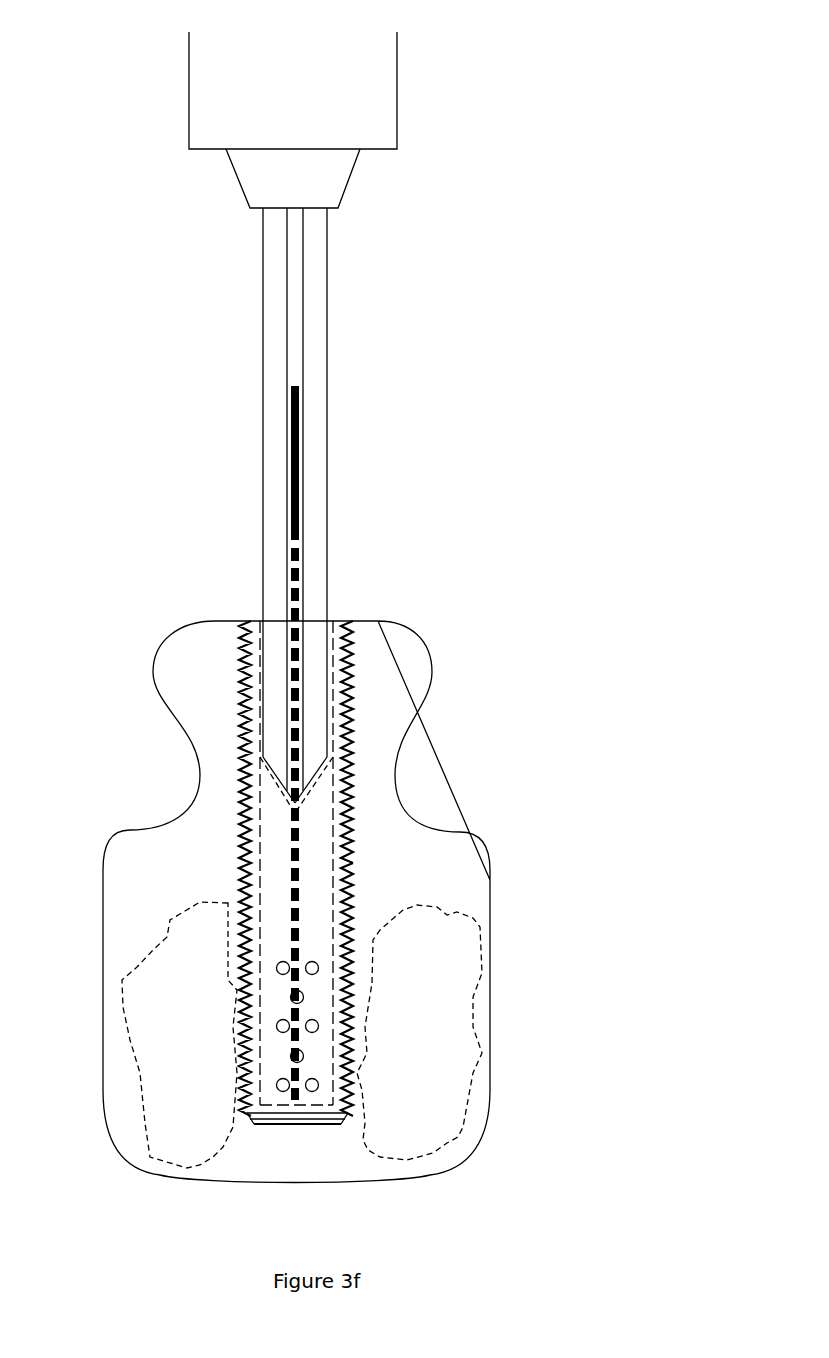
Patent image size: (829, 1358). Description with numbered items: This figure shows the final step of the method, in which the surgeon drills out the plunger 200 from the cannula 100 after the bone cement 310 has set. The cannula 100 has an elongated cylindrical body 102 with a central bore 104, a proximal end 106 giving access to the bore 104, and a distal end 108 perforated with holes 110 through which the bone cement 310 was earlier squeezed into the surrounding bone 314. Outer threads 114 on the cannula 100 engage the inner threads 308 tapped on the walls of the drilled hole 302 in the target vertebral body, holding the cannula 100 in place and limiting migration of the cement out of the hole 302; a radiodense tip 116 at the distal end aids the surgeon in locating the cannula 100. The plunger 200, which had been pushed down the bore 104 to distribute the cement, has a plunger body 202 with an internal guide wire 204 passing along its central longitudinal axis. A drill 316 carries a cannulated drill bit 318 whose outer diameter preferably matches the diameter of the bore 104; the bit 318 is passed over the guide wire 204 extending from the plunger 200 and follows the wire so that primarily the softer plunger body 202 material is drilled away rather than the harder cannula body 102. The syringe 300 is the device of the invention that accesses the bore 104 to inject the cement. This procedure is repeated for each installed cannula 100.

The cannula 100 is at (480, 717).
The elongated cylindrical body 102 is at (352, 617).
The central bore 104 is at (322, 708).
The proximal end 106 is at (343, 592).
The distal end 108 is at (325, 1137).
The holes 110 is at (318, 1090).
The outer threads 114 is at (355, 908).
The radiodense tip 116 is at (268, 1122).
The plunger 200 is at (260, 825).
The plunger body 202 is at (320, 865).
The guide wire 204 is at (292, 473).
The syringe 300 is at (447, 872).
The hole 302 is at (238, 612).
The threads 308 is at (355, 775).
The bone cement 310 is at (165, 1012).
The bone 314 is at (472, 902).
The drill 316 is at (383, 113).
The cannulated drill bit 318 is at (318, 378).